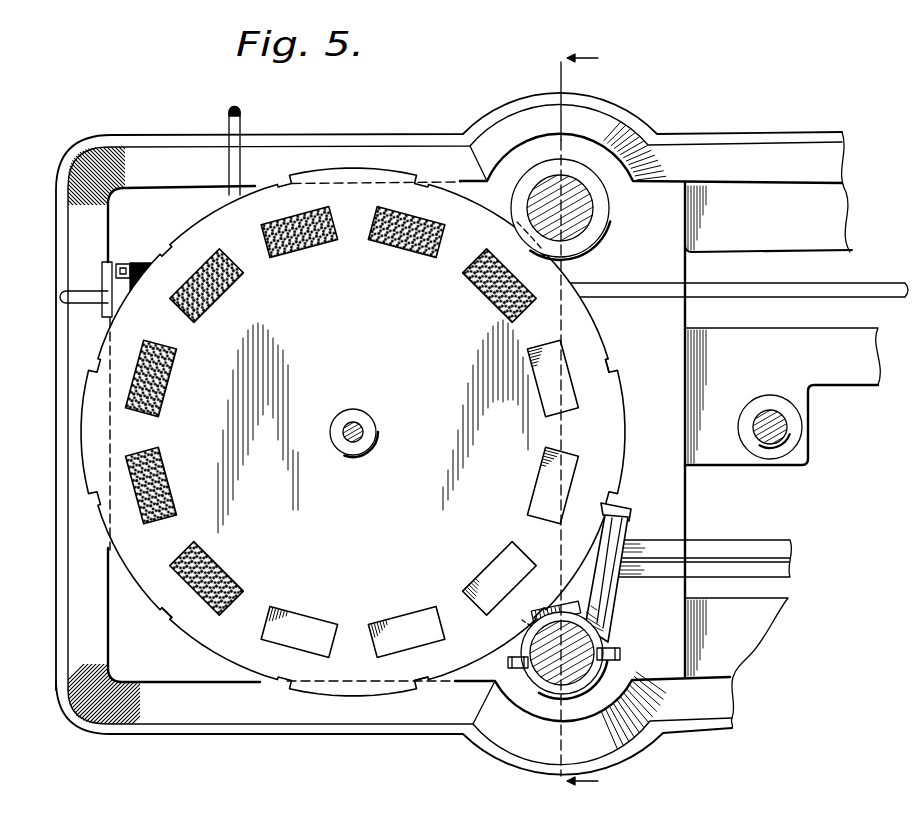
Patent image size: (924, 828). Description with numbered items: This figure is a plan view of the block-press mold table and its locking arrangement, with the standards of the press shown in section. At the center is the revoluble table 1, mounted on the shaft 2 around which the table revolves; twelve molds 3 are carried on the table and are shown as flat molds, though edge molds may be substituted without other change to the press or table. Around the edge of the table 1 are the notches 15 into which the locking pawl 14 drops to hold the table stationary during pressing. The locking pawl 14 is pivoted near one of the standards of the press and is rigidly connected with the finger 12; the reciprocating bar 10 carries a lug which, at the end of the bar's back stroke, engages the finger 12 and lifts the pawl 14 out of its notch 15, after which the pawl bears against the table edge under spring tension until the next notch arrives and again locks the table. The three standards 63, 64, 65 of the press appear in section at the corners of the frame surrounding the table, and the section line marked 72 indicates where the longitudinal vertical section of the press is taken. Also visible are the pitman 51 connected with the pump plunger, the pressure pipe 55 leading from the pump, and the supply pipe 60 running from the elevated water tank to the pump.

The revoluble table 1 is at (167, 434).
The shaft 2 is at (360, 428).
The molds 3 is at (300, 250).
The reciprocating bar 10 is at (729, 550).
The finger 12 is at (563, 607).
The locking pawl 14 is at (603, 600).
The notches 15 is at (614, 369).
The pitman 51 is at (791, 290).
The pipe 55 is at (64, 300).
The pipe 60 is at (238, 137).
The standard 63 is at (606, 645).
The standard 64 is at (586, 223).
The standard 65 is at (790, 427).
The fly wheel 72 is at (573, 418).